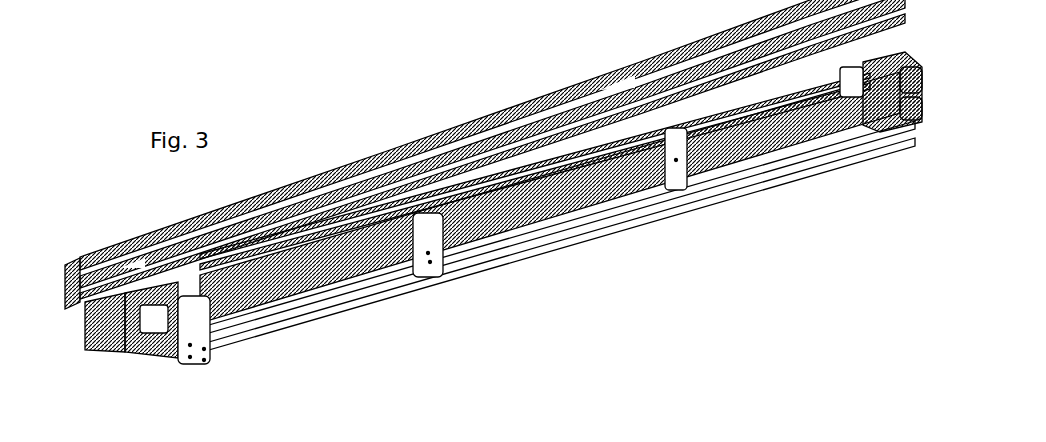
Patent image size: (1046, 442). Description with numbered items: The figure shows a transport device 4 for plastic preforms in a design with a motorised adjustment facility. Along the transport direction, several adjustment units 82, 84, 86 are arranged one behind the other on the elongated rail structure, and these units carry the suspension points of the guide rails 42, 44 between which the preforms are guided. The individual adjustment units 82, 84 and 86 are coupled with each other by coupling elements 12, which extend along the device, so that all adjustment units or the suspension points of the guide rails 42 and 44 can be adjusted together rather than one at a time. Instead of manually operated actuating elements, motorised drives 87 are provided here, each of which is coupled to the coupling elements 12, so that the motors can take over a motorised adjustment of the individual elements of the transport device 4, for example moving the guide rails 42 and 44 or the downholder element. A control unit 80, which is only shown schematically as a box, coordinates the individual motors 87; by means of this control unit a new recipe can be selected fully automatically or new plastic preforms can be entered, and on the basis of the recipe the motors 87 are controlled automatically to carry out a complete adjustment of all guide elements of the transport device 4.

The transport device 4 is at (584, 248).
The coupling elements 12 is at (311, 327).
The guide rail 42 is at (112, 352).
The guide rail 44 is at (143, 355).
The control unit 80 is at (803, 200).
The adjustment unit 82 is at (208, 353).
The adjustment unit 84 is at (439, 247).
The adjustment unit 86 is at (683, 153).
The motorised drive 87 is at (892, 117).